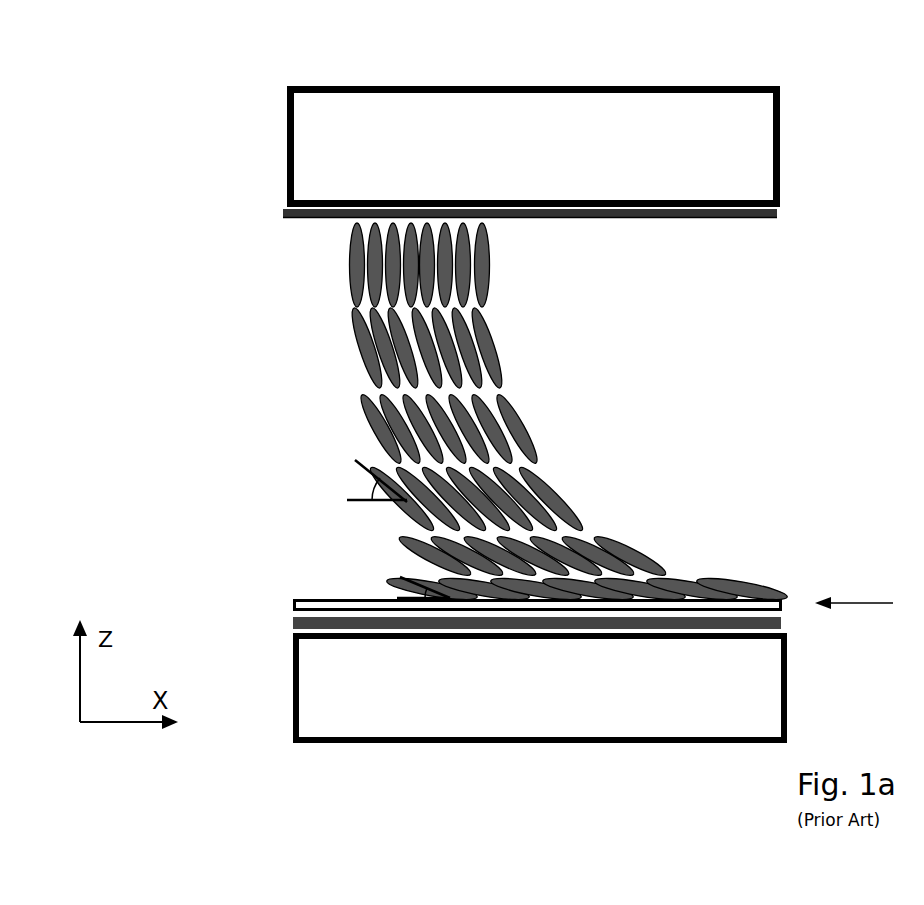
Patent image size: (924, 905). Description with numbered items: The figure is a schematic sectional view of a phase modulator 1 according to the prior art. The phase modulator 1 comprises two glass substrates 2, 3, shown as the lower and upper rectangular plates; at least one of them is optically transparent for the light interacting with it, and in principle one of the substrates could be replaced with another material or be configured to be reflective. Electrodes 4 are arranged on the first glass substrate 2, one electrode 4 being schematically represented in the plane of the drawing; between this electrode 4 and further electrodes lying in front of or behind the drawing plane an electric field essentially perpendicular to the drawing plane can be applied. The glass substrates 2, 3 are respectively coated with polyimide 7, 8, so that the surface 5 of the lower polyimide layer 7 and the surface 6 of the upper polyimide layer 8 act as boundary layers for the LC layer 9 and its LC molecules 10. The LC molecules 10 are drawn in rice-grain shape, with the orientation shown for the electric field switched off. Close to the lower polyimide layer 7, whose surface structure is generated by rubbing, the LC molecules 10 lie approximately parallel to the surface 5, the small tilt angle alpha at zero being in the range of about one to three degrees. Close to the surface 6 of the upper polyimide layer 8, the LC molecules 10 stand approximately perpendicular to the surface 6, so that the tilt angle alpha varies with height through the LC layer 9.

The phase modulator 1 is at (826, 89).
The first glass substrate 2 is at (540, 701).
The second glass substrate 3 is at (520, 166).
The electrode 4 is at (305, 631).
The surface 5 is at (333, 593).
The surface 6 is at (333, 222).
The lower polyimide layer 7 is at (777, 600).
The upper polyimide layer 8 is at (777, 214).
The LC layer 9 is at (592, 413).
The LC molecules 10 is at (551, 413).